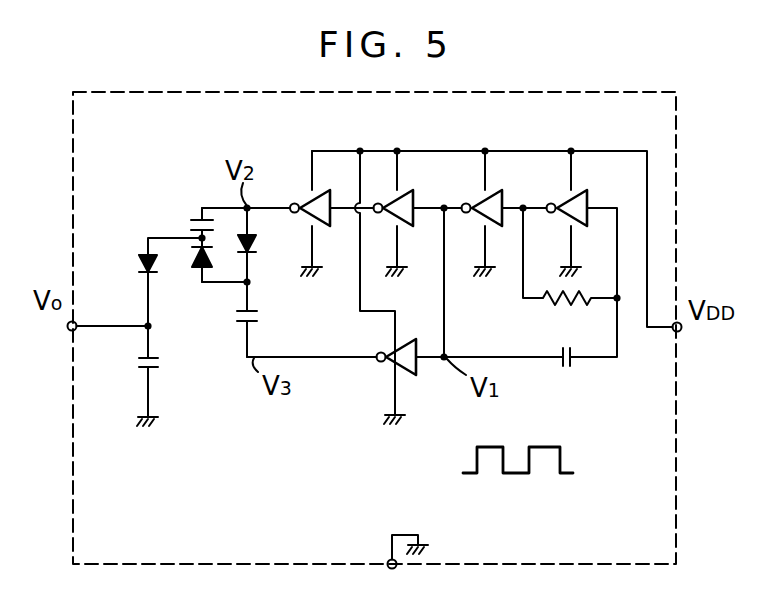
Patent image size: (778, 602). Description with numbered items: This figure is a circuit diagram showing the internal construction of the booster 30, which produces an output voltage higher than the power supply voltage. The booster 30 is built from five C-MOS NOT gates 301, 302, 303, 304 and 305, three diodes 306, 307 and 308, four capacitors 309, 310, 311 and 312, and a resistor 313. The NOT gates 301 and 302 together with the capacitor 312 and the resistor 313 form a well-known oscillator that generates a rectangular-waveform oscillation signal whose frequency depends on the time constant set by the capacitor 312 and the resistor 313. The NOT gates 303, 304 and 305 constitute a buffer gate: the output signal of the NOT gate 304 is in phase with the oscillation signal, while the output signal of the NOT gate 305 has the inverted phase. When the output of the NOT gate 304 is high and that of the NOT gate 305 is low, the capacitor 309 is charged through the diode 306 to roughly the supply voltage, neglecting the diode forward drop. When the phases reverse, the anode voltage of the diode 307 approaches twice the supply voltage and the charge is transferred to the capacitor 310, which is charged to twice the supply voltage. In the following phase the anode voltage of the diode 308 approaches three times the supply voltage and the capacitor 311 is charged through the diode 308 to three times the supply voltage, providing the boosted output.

The booster 30 is at (677, 478).
The NOT gate 301 is at (585, 198).
The NOT gate 302 is at (500, 198).
The NOT gate 303 is at (410, 198).
The NOT gate 304 is at (292, 203).
The NOT gate 305 is at (416, 368).
The diode 306 is at (256, 250).
The diode 307 is at (205, 268).
The diode 308 is at (145, 262).
The capacitor 309 is at (258, 313).
The capacitor 310 is at (197, 222).
The capacitor 311 is at (160, 364).
The capacitor 312 is at (569, 362).
The resistor 313 is at (553, 300).